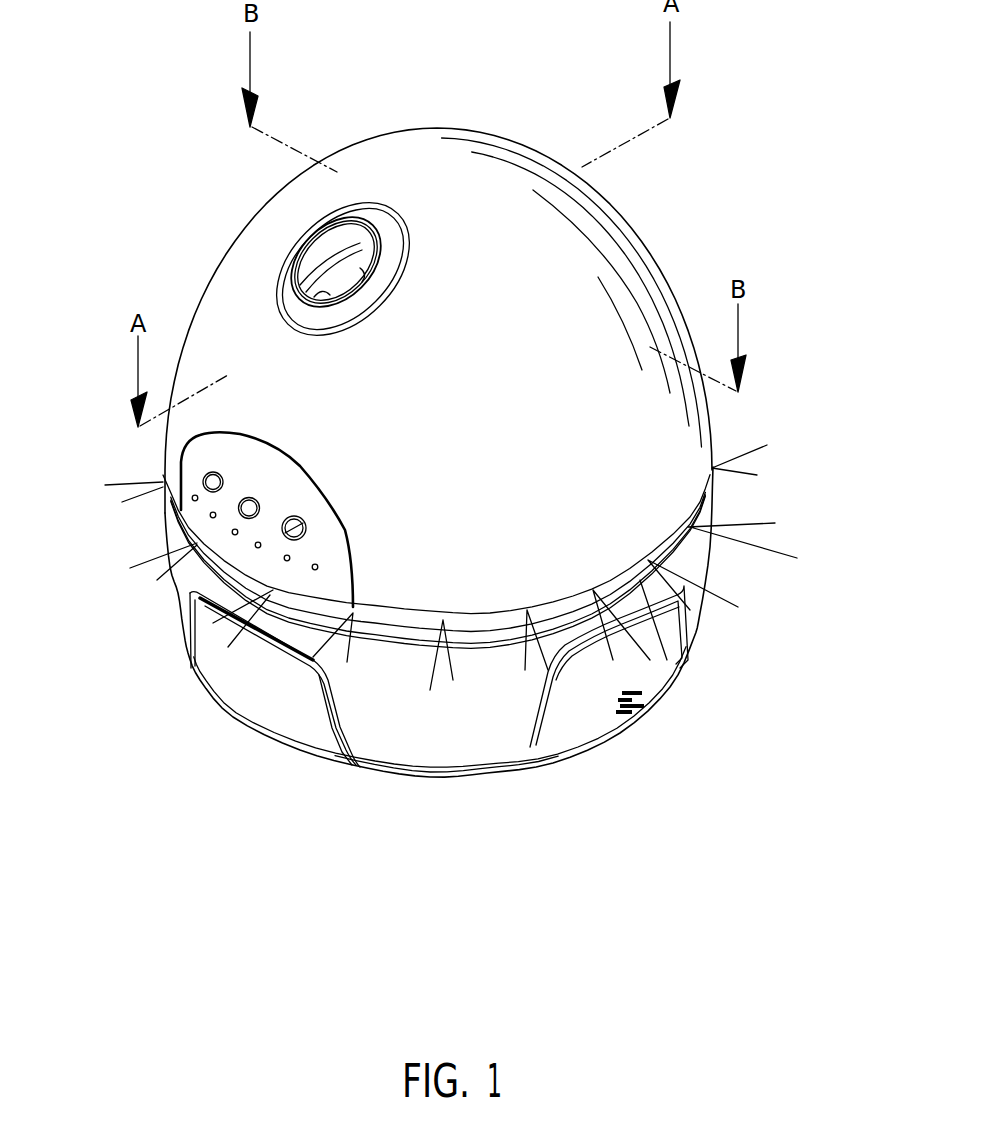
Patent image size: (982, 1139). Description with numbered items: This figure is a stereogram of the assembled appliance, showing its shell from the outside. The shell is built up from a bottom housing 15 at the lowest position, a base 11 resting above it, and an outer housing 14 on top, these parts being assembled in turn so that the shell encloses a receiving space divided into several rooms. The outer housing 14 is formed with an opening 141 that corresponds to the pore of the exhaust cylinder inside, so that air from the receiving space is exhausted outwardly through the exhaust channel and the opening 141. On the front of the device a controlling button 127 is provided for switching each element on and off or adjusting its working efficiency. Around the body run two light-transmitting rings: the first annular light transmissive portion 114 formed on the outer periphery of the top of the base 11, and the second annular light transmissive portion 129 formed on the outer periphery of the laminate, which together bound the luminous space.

The base 11 is at (180, 600).
The outer housing 14 is at (415, 153).
The opening 141 is at (315, 248).
The controlling button 127 is at (203, 480).
The second annular light transmissive portion 129 is at (413, 610).
The first annular light transmissive portion 114 is at (490, 637).
The bottom housing 15 is at (296, 713).